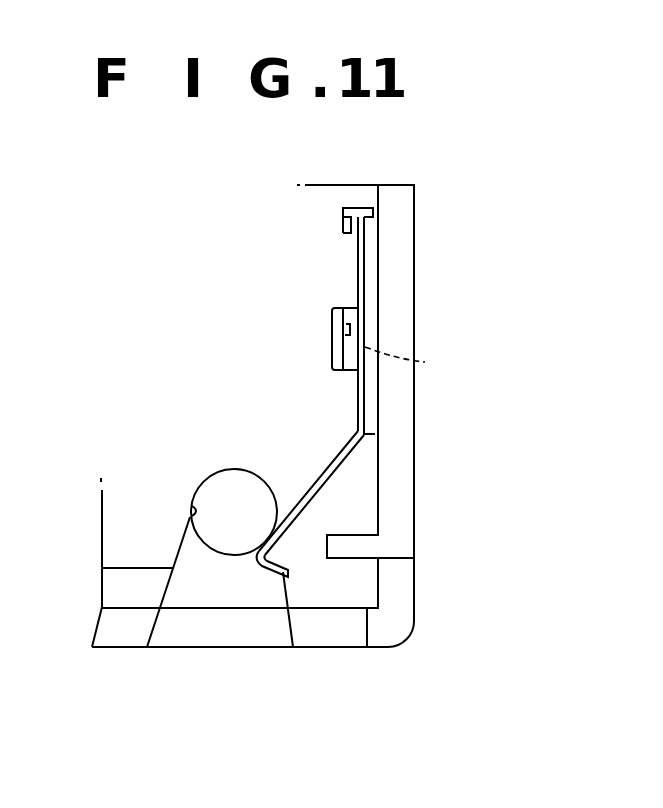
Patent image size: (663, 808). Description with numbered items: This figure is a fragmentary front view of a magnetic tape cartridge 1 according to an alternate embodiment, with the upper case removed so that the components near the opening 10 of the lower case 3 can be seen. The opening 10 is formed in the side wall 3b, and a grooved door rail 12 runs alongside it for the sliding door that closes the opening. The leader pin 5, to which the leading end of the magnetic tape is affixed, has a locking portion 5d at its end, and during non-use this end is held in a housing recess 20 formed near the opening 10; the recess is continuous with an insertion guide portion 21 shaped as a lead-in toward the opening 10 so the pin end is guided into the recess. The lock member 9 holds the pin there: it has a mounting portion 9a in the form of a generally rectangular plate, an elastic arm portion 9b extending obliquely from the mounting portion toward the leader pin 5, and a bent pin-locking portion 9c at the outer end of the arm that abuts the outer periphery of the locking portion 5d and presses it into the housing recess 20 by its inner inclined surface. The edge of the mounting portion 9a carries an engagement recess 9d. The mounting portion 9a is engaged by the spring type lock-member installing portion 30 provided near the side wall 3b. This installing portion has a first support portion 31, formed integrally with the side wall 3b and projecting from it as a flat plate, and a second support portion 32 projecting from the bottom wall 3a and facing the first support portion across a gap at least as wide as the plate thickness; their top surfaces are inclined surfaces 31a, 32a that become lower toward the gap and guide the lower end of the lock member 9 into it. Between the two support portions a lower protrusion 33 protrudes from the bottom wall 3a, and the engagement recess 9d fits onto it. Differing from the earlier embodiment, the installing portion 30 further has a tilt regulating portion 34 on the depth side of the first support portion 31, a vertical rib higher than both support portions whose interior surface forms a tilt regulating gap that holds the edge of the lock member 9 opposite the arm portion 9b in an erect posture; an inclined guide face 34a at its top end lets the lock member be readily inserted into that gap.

The magnetic tape cartridge 1 is at (153, 202).
The lower case 3 is at (425, 184).
The bottom wall 3a is at (342, 593).
The side wall 3b is at (403, 243).
The leader pin 5 is at (195, 475).
The locking portion 5d is at (235, 477).
The lock member 9 is at (336, 492).
The mounting portion 9a is at (357, 257).
The arm portion 9b is at (337, 460).
The pin-locking portion 9c is at (272, 543).
The engagement recess 9d is at (363, 325).
The opening 10 is at (182, 592).
The door rail 12 is at (118, 587).
The housing recess 20 is at (192, 513).
The insertion guide portion 21 is at (220, 625).
The lock-member installing portion 30 is at (323, 308).
The first support portion 31 is at (377, 433).
The inclined surface 31a is at (370, 395).
The second support portion 32 is at (335, 369).
The inclined surface 32a is at (342, 332).
The lower protrusion 33 is at (425, 362).
The tilt regulating portion 34 is at (355, 208).
The inclined guide face 34a is at (343, 216).